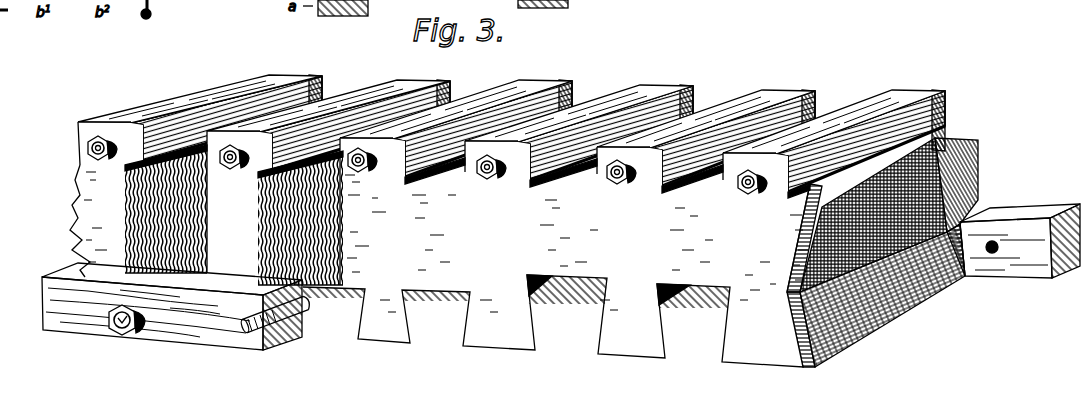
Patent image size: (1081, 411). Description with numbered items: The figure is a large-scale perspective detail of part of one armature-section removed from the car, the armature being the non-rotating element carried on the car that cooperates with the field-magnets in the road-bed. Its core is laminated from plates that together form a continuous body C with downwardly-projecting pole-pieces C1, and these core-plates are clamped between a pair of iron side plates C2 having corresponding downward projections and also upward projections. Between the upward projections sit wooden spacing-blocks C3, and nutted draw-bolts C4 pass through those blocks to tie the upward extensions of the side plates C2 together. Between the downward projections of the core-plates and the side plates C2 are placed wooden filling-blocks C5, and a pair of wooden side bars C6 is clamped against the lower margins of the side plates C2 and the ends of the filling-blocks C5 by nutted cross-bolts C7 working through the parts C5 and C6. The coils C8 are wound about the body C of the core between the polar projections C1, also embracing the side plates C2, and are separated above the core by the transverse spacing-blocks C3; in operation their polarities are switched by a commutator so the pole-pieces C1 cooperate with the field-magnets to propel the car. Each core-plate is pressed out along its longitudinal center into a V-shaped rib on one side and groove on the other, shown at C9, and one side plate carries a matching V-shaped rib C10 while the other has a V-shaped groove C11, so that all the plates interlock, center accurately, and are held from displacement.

The core body C is at (947, 137).
The pole-pieces C1 is at (528, 294).
The side plates C2 is at (792, 262).
The spacing-blocks C3 is at (322, 86).
The draw-bolts C4 is at (99, 162).
The filling-blocks C5 is at (408, 332).
The side bars C6 is at (208, 333).
The cross-bolts C7 is at (116, 335).
The coils C8 is at (122, 215).
The V-shaped rib and groove C9 is at (975, 181).
The V-shaped rib C10 is at (808, 234).
The V-shaped groove C11 is at (978, 172).